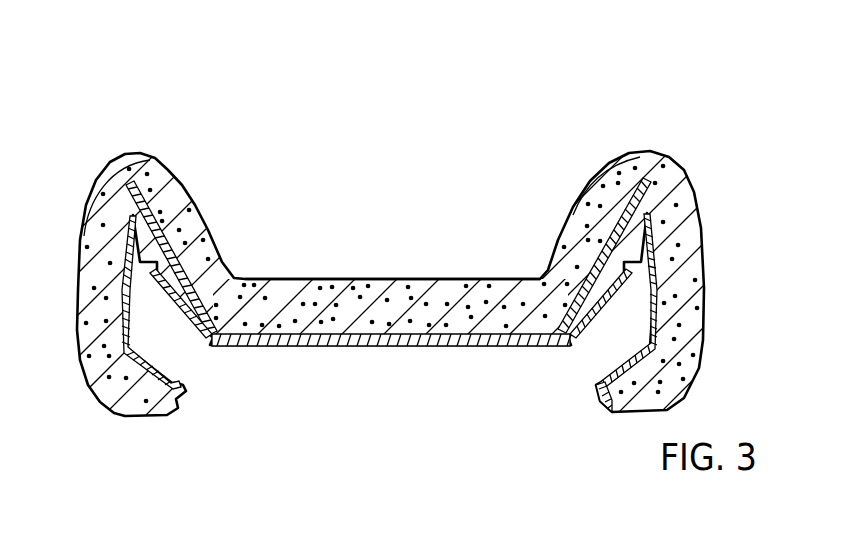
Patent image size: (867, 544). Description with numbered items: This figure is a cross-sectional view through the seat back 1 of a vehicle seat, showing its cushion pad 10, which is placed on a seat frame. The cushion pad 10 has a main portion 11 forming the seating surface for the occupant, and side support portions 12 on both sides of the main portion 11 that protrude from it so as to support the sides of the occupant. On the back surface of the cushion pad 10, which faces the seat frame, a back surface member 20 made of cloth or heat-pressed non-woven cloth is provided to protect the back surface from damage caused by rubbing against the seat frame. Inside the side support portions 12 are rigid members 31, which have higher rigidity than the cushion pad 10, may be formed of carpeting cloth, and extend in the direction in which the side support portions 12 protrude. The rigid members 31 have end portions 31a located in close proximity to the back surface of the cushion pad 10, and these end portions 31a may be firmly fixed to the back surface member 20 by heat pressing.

The seat back 1 is at (251, 119).
The cushion pad 10 is at (422, 314).
The main portion 11 is at (250, 264).
The side support portions 12 is at (258, 262).
The back surface member 20 is at (328, 346).
The rigid members 31 is at (131, 197).
The end portions 31a is at (201, 340).